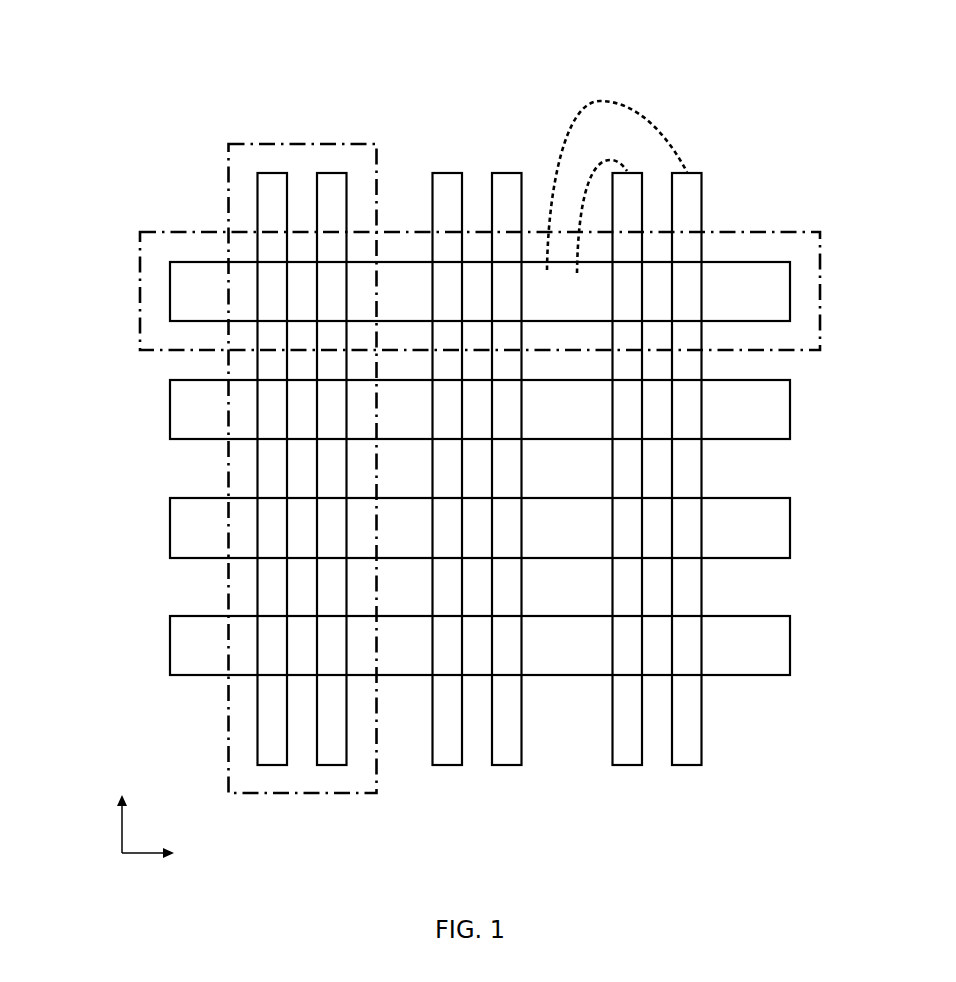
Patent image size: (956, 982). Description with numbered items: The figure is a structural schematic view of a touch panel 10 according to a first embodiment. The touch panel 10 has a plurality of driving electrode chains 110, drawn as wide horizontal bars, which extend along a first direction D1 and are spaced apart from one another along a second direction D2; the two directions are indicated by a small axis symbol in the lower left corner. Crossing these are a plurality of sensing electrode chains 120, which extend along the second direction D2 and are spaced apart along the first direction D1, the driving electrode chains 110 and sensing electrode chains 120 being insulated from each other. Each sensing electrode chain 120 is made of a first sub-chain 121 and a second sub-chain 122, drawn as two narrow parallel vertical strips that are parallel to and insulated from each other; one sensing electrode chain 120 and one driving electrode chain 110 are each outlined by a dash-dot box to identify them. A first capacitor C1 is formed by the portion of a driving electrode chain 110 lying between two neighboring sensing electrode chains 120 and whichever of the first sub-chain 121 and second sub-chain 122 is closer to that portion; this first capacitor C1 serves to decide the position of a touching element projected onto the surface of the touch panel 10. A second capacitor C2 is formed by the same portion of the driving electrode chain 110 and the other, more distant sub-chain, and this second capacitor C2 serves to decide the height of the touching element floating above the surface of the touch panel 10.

The touch panel 10 is at (493, 37).
The driving electrode chains 110 is at (140, 280).
The sensing electrode chains 120 is at (227, 187).
The first sub-chain 121 is at (277, 175).
The second sub-chain 122 is at (332, 175).
The first capacitor C1 is at (602, 206).
The second capacitor C2 is at (617, 171).
The first direction D1 is at (169, 864).
The second direction D2 is at (118, 810).